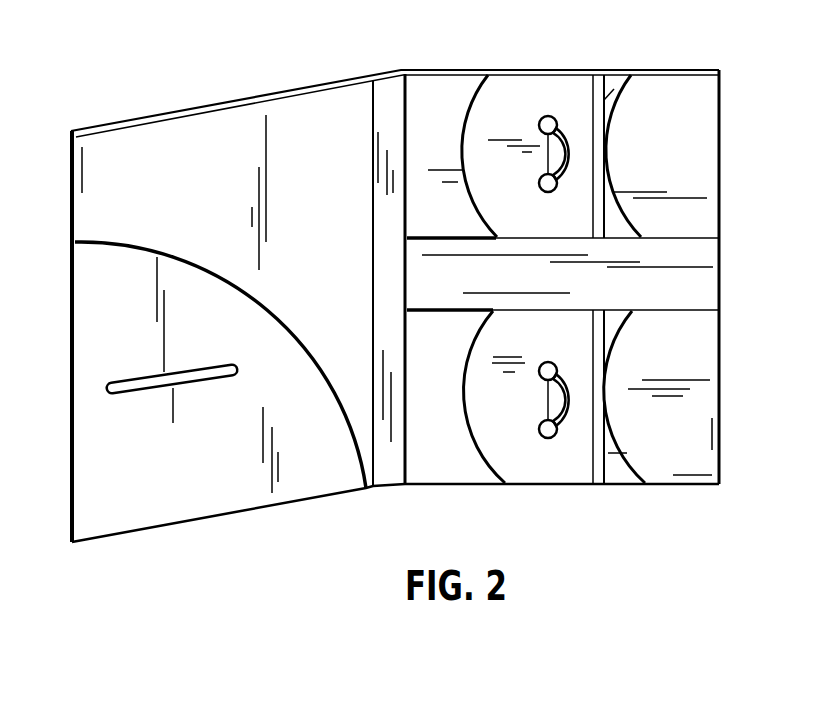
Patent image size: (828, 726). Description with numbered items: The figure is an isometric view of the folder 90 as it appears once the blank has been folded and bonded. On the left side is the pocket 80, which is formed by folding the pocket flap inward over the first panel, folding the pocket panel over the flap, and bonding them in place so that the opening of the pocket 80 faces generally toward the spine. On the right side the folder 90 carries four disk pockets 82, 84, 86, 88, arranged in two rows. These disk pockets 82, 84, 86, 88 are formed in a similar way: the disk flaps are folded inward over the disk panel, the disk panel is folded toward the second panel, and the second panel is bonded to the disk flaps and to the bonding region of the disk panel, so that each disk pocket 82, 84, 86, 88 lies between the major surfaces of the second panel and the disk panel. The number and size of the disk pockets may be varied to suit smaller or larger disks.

The folder 90 is at (163, 57).
The pocket 80 is at (101, 243).
The disk pocket 82 is at (612, 101).
The disk pocket 84 is at (607, 326).
The disk pocket 86 is at (463, 128).
The disk pocket 88 is at (467, 417).